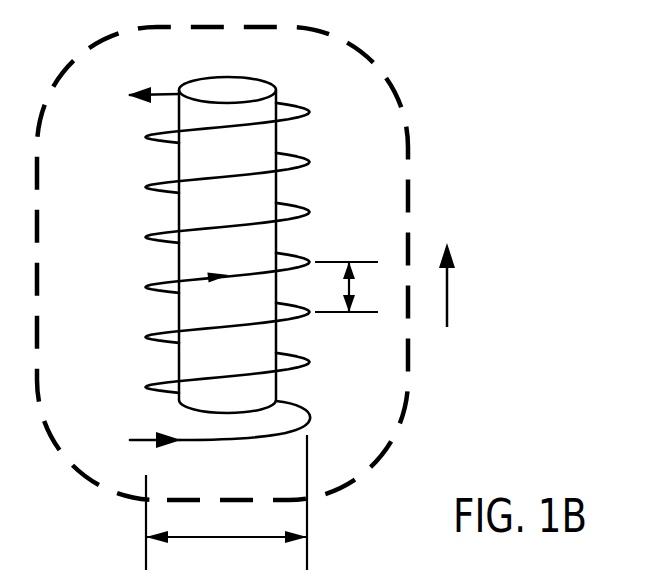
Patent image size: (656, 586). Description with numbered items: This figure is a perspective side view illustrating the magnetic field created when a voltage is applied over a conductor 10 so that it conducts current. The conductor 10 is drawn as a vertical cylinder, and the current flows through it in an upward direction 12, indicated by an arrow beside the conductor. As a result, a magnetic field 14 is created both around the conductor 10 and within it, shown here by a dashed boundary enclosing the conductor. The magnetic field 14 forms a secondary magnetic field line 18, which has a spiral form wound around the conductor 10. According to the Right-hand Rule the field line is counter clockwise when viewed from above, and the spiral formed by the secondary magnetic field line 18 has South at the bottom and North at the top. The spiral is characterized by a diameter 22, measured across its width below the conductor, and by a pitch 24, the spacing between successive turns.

The conductor 10 is at (296, 398).
The upward direction 12 is at (460, 285).
The magnetic field 14 is at (408, 90).
The secondary magnetic field line 18 is at (126, 332).
The diameter 22 is at (226, 502).
The pitch 24 is at (353, 287).